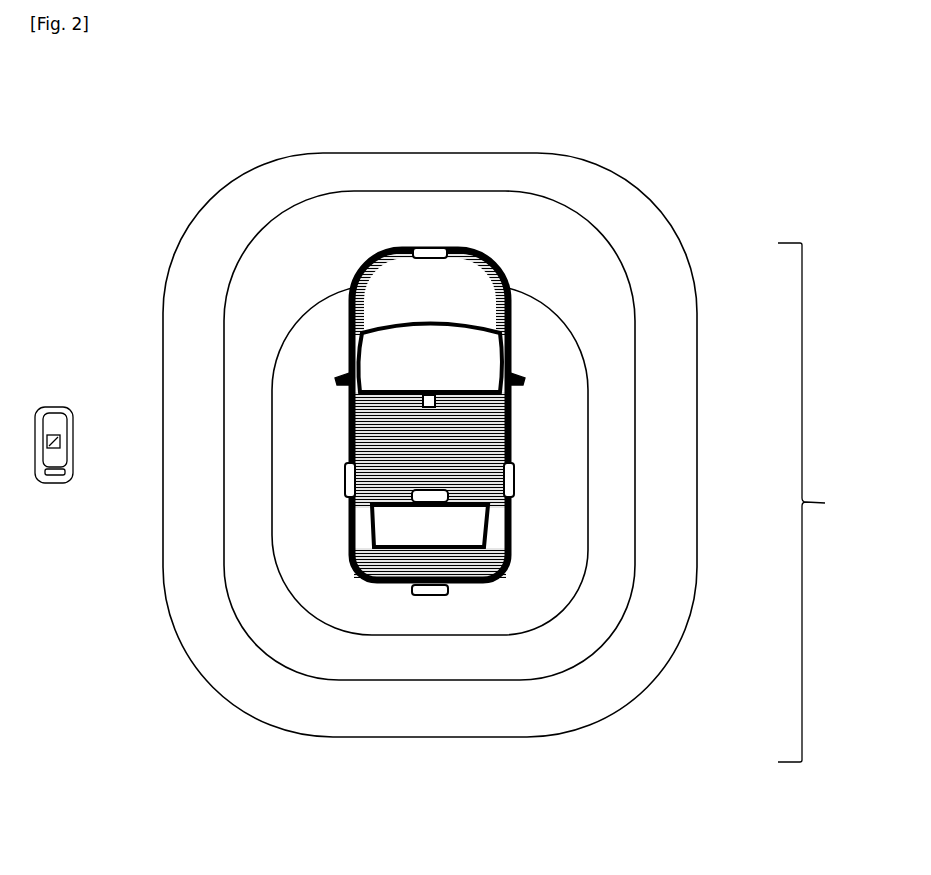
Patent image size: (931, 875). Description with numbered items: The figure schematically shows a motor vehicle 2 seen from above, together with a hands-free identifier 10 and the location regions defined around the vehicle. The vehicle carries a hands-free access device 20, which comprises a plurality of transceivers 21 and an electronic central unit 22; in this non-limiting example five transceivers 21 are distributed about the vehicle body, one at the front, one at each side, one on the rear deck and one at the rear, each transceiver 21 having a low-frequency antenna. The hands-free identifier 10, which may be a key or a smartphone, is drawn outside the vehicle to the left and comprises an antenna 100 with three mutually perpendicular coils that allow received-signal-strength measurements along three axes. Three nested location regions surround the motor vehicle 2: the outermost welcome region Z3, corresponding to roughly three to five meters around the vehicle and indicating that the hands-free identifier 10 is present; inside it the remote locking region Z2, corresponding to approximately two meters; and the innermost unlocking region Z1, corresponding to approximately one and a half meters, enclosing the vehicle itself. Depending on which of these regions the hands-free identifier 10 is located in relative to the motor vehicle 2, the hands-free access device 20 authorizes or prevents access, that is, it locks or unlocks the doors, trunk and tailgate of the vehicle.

The motor vehicle 2 is at (385, 277).
The hands-free identifier 10 is at (51, 410).
The antenna 100 is at (58, 436).
The hands-free access device 20 is at (587, 483).
The transceiver 21 is at (447, 254).
The electronic central unit 22 is at (436, 396).
The unlocking region Z1 is at (430, 460).
The remote locking region Z2 is at (429, 435).
The welcome region Z3 is at (430, 445).